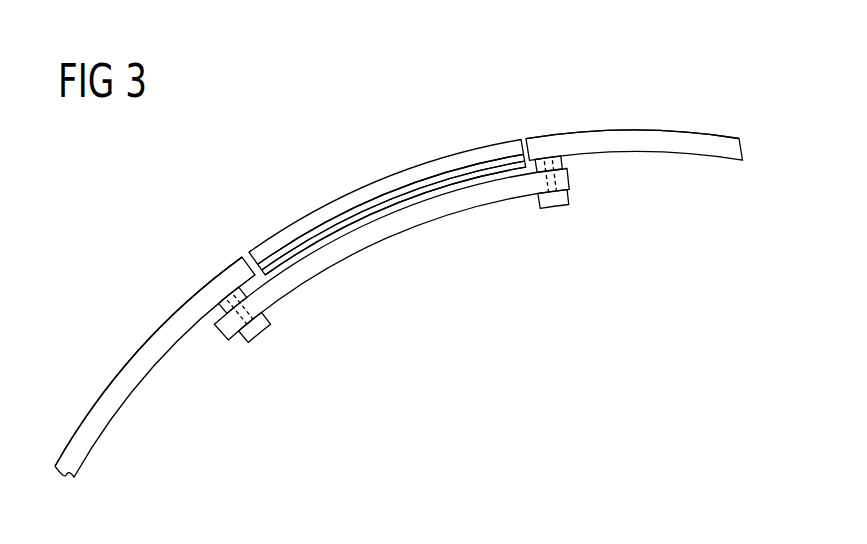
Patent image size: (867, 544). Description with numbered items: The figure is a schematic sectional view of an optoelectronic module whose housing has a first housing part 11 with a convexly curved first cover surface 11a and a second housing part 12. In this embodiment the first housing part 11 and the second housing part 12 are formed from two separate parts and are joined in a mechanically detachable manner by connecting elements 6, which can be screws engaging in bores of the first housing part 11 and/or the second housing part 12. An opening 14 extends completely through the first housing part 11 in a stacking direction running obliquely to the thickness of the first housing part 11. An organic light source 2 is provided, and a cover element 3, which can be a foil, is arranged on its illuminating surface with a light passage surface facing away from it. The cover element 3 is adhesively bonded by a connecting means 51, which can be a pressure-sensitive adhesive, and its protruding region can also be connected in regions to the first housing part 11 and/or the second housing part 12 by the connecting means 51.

The organic light source 2 is at (383, 201).
The cover element 3 is at (425, 168).
The connecting elements 6 is at (552, 205).
The first housing part 11 is at (673, 149).
The first cover surface 11a is at (113, 377).
The second housing part 12 is at (320, 264).
The opening 14 is at (267, 219).
The connecting means 51 is at (477, 162).